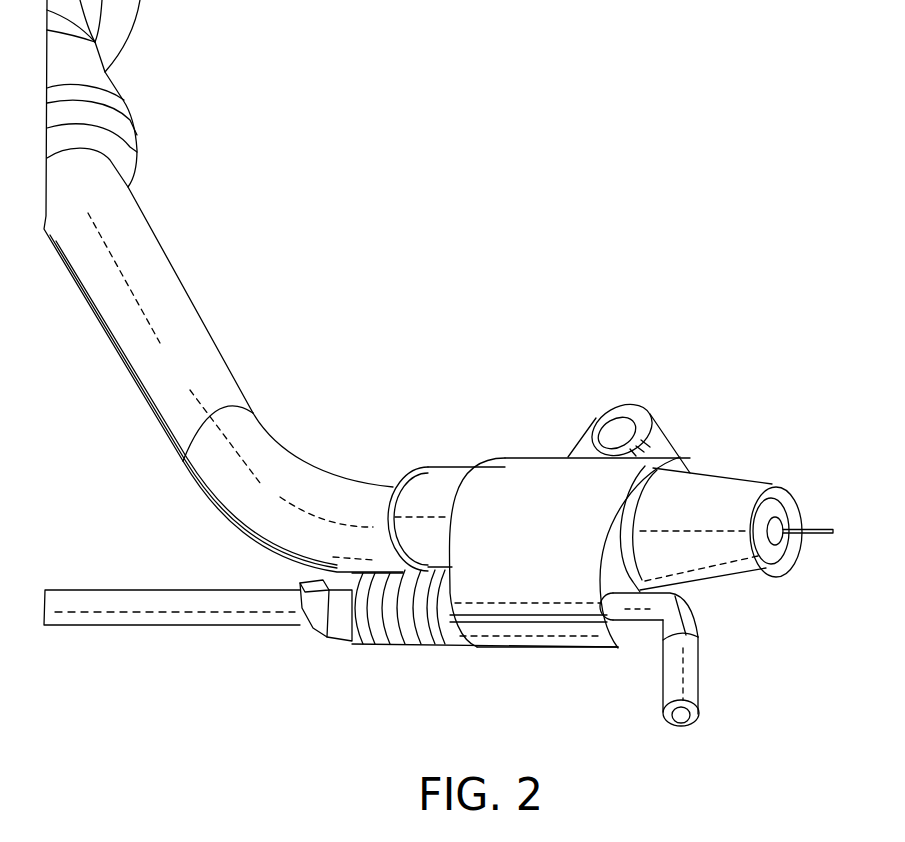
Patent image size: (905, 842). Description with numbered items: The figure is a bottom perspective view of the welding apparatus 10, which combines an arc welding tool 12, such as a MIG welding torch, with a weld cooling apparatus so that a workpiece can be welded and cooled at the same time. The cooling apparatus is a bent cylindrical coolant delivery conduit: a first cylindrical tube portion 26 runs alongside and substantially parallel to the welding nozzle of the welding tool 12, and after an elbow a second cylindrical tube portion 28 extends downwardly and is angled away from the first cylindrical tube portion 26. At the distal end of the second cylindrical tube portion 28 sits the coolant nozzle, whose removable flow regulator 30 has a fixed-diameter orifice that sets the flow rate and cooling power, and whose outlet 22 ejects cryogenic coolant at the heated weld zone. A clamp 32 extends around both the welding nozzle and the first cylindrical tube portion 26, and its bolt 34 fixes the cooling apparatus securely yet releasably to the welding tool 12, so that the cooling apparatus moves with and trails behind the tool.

The welding apparatus 10 is at (438, 386).
The arc welding tool 12 is at (167, 262).
The outlet 22 is at (682, 727).
The first cylindrical tube portion 26 is at (617, 648).
The second cylindrical tube portion 28 is at (690, 617).
The removable flow regulator 30 is at (665, 680).
The clamp 32 is at (523, 470).
The bolt 34 is at (610, 435).